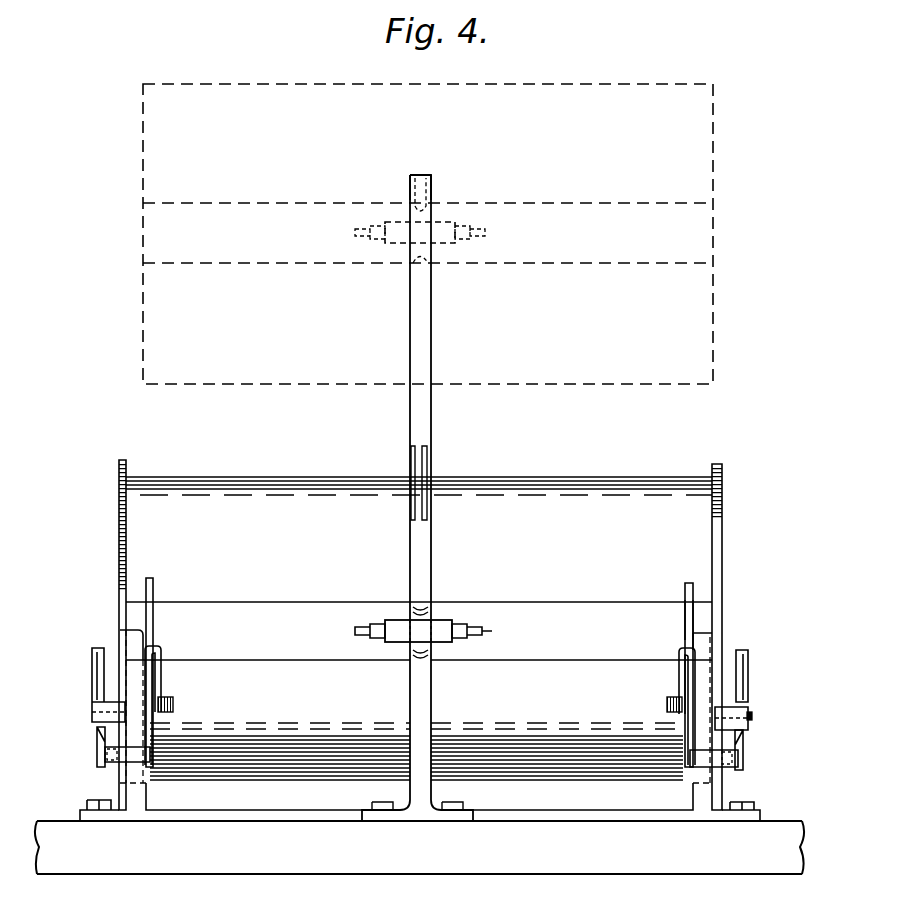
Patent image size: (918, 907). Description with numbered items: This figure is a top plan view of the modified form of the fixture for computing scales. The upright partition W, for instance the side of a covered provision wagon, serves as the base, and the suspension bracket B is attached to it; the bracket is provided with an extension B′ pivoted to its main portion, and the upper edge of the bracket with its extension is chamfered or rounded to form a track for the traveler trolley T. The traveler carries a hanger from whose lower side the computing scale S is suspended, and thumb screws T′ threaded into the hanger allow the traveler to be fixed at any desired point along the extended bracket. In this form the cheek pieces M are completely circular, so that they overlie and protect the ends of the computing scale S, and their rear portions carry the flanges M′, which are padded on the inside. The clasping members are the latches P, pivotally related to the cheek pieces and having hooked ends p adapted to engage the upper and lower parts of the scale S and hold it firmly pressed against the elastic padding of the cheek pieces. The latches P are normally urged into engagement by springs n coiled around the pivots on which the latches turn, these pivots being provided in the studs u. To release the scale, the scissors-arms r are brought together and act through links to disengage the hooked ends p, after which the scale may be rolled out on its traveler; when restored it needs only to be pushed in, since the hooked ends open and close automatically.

The upright partition W is at (419, 847).
The computing scale S is at (142, 168).
The cheek pieces M is at (120, 591).
The flanges M′ is at (138, 641).
The suspension bracket B is at (432, 695).
The extension B′ is at (432, 406).
The traveler trolley T is at (420, 205).
The thumb screws T′ is at (355, 232).
The studs u is at (135, 697).
The scissors-arms r is at (95, 740).
The springs n is at (170, 676).
The hooked ends p is at (685, 625).
The latches P is at (152, 735).